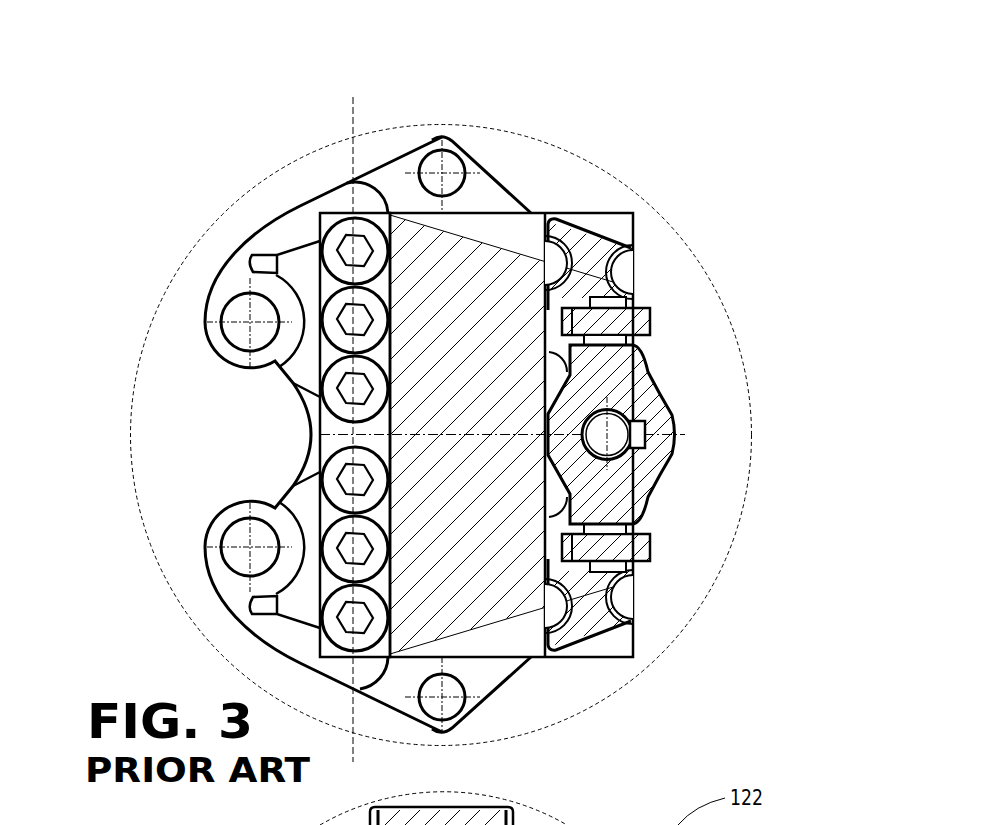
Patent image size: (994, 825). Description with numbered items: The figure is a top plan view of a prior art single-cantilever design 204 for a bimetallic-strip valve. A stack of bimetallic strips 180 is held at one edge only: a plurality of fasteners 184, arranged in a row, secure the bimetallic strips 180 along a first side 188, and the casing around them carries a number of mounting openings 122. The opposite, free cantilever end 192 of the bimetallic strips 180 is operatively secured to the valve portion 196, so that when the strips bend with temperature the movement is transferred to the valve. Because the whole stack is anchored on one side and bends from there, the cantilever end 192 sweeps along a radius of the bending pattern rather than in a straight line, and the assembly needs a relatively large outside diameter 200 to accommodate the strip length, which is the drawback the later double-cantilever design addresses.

The mounting openings 122 is at (240, 313).
The bimetallic strips 180 is at (453, 253).
The fasteners 184 is at (333, 233).
The first side 188 is at (366, 112).
The cantilever end 192 is at (656, 596).
The valve portion 196 is at (692, 455).
The outside diameter 200 is at (693, 253).
The single-cantilever design 204 is at (718, 128).